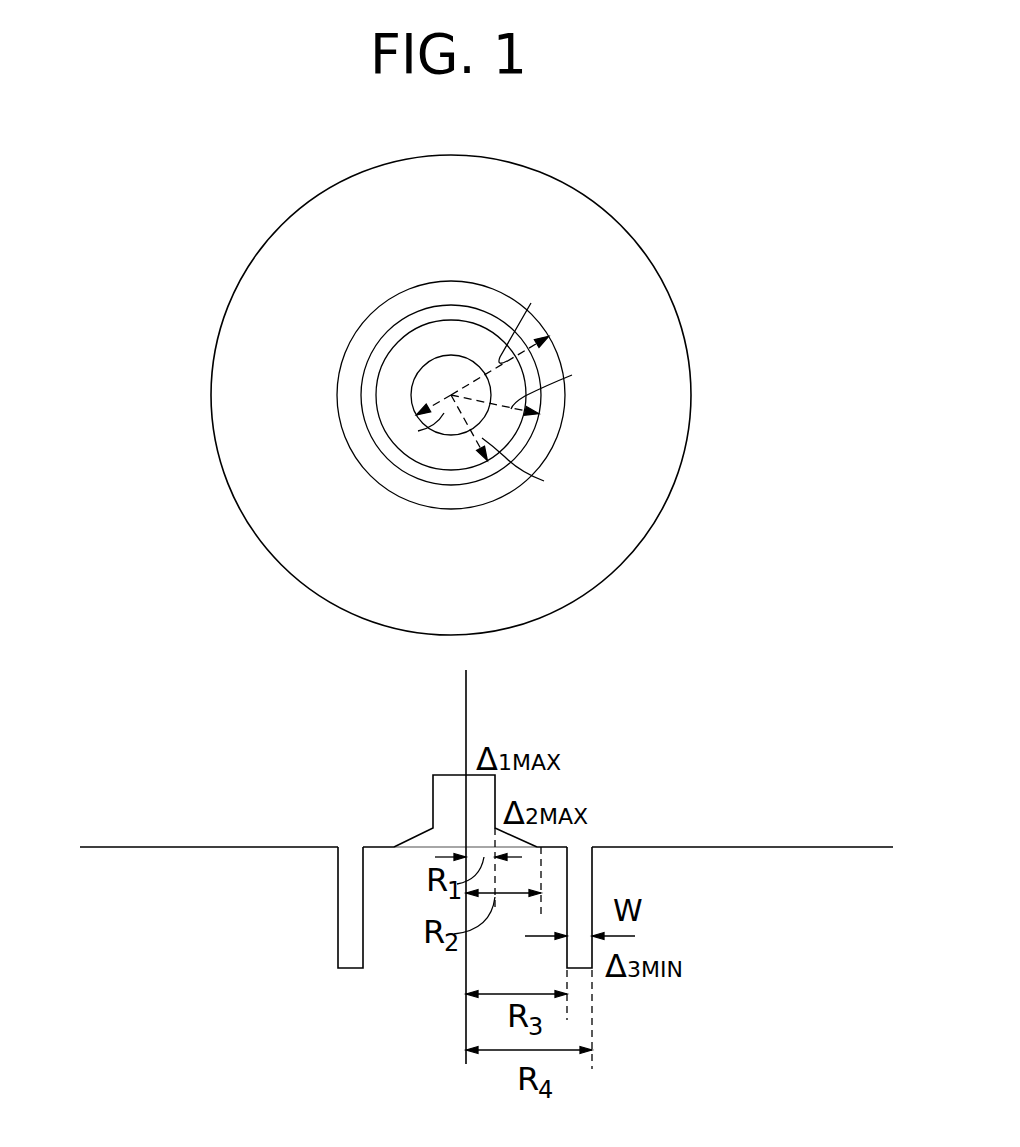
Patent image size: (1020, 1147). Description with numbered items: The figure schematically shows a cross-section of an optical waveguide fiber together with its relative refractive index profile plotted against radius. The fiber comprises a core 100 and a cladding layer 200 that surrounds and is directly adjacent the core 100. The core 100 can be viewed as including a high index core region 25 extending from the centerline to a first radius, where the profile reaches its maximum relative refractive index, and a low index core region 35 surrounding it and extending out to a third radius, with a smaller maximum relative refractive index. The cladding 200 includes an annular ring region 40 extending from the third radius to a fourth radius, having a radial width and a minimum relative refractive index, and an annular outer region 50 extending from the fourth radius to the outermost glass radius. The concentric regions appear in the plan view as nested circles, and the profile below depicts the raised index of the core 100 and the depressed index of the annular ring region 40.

The core 100 is at (122, 462).
The high index core region 25 is at (437, 379).
The low index core region 35 is at (390, 393).
The annular ring region 40 is at (548, 362).
The annular outer region 50 is at (695, 399).
The cladding layer 200 is at (730, 282).